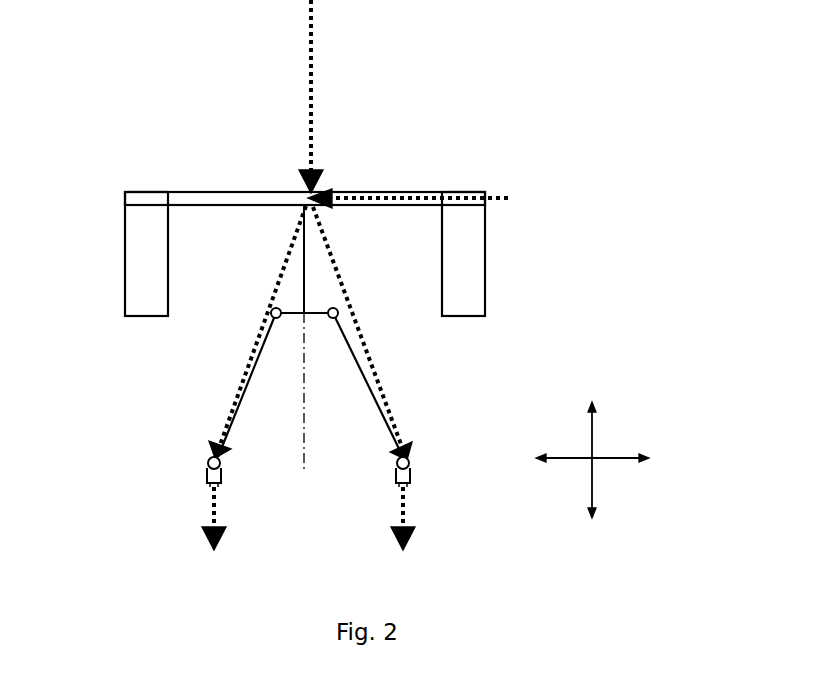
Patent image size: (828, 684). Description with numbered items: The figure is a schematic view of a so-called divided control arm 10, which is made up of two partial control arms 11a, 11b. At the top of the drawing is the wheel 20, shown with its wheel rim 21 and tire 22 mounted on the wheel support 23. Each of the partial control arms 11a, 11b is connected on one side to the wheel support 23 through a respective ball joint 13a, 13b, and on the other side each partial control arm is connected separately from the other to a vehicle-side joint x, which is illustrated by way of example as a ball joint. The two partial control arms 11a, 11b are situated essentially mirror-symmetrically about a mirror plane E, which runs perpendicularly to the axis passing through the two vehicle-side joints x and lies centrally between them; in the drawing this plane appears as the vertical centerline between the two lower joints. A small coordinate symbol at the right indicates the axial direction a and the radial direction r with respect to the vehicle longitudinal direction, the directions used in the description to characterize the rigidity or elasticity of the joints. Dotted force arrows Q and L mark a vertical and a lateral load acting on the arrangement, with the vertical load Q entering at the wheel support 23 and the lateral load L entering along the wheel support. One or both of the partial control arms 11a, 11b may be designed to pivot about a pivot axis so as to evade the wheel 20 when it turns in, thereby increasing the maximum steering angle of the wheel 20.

The divided control arm 10 is at (311, 333).
The partial control arm 11a is at (377, 395).
The partial control arm 11b is at (238, 385).
The ball joint 13a is at (340, 314).
The ball joint 13b is at (270, 313).
The wheel 20 is at (347, 208).
The wheel rim 21 is at (192, 191).
The tire 22 is at (472, 253).
The wheel support 23 is at (307, 227).
The vertical load Q is at (311, 110).
The lateral load L is at (507, 198).
The mirror plane E is at (304, 376).
The vehicle-side joint x is at (209, 463).
The radial direction r is at (592, 428).
The axial direction a is at (623, 458).